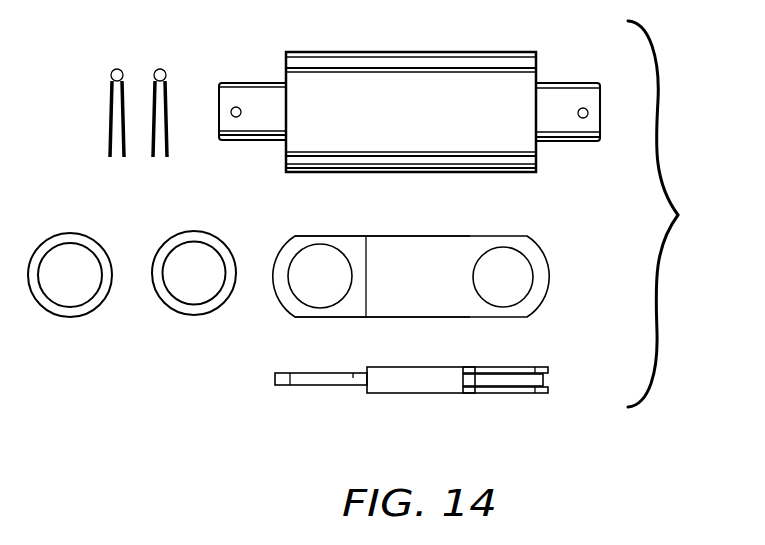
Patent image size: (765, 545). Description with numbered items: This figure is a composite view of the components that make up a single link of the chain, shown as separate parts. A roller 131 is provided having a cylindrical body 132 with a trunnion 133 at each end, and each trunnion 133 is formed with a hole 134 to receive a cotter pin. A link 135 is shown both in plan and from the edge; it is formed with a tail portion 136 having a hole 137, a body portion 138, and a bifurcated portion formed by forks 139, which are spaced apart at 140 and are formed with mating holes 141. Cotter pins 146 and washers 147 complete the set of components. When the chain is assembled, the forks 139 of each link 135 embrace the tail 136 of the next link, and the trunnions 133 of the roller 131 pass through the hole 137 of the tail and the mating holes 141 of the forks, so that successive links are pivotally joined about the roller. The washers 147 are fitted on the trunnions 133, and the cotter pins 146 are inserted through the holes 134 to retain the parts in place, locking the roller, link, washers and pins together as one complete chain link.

The roller 131 is at (444, 42).
The cylindrical body 132 is at (438, 122).
The trunnion 133 is at (253, 97).
The hole 134 is at (241, 117).
The link 135 is at (460, 231).
The tail portion 136 is at (352, 300).
The hole 137 is at (330, 254).
The body portion 138 is at (437, 287).
The forks 139 is at (547, 365).
The spacing of the forks 140 is at (543, 380).
The mating holes 141 is at (523, 278).
The cotter pin 146 is at (163, 67).
The washer 147 is at (157, 248).